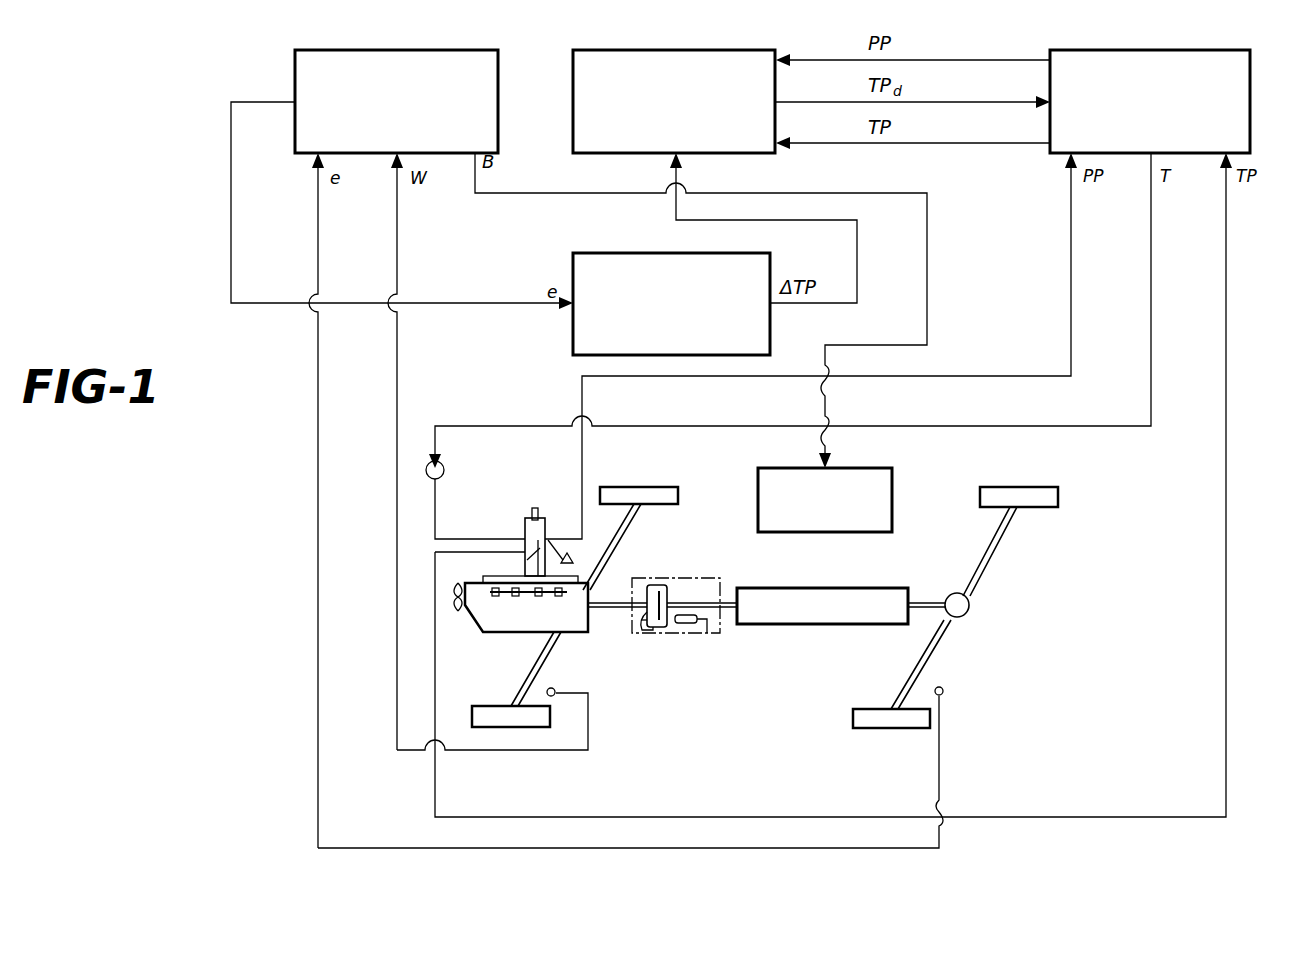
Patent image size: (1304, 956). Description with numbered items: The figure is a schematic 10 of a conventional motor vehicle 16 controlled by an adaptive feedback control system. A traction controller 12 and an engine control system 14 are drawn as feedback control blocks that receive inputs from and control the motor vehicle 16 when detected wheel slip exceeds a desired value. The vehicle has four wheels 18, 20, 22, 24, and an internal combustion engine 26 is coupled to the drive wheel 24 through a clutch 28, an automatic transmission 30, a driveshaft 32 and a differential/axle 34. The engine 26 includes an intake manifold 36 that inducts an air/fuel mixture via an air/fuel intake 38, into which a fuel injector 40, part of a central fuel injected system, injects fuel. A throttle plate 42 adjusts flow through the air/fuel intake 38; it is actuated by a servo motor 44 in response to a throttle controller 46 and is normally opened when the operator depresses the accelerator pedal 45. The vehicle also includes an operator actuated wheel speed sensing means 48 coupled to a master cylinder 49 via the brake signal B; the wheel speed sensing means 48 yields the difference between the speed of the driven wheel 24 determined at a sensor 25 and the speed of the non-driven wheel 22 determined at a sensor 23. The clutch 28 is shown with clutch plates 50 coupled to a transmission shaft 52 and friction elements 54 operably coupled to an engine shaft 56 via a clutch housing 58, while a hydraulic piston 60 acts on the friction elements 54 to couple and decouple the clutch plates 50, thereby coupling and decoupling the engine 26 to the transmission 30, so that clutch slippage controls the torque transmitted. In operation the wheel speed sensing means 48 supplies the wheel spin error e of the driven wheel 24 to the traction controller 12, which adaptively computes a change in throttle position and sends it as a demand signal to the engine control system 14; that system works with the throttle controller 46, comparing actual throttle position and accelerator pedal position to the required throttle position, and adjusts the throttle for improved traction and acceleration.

The schematic of a motor vehicle 10 is at (176, 80).
The traction controller 12 is at (605, 253).
The engine control system 14 is at (573, 70).
The motor vehicle 16 is at (903, 538).
The wheel 18 is at (640, 487).
The wheel 20 is at (1058, 500).
The wheel 22 is at (485, 706).
The sensor 23 is at (556, 695).
The drive wheel 24 is at (853, 712).
The sensor 25 is at (943, 688).
The internal combustion engine 26 is at (522, 495).
The clutch 28 is at (686, 578).
The automatic transmission 30 is at (790, 625).
The driveshaft 32 is at (925, 600).
The differential/axle 34 is at (972, 602).
The intake manifold 36 is at (574, 578).
The air/fuel intake 38 is at (525, 522).
The fuel injector 40 is at (535, 508).
The throttle plate 42 is at (528, 556).
The servo motor 44 is at (428, 464).
The accelerator pedal 45 is at (562, 552).
The throttle controller 46 is at (1252, 120).
The wheel speed sensing means 48 is at (295, 72).
The master cylinder 49 is at (892, 478).
The clutch plates 50 is at (652, 630).
The transmission shaft 52 is at (735, 597).
The friction elements 54 is at (655, 585).
The engine shaft 56 is at (598, 610).
The clutch housing 58 is at (640, 630).
The hydraulic piston 60 is at (688, 628).